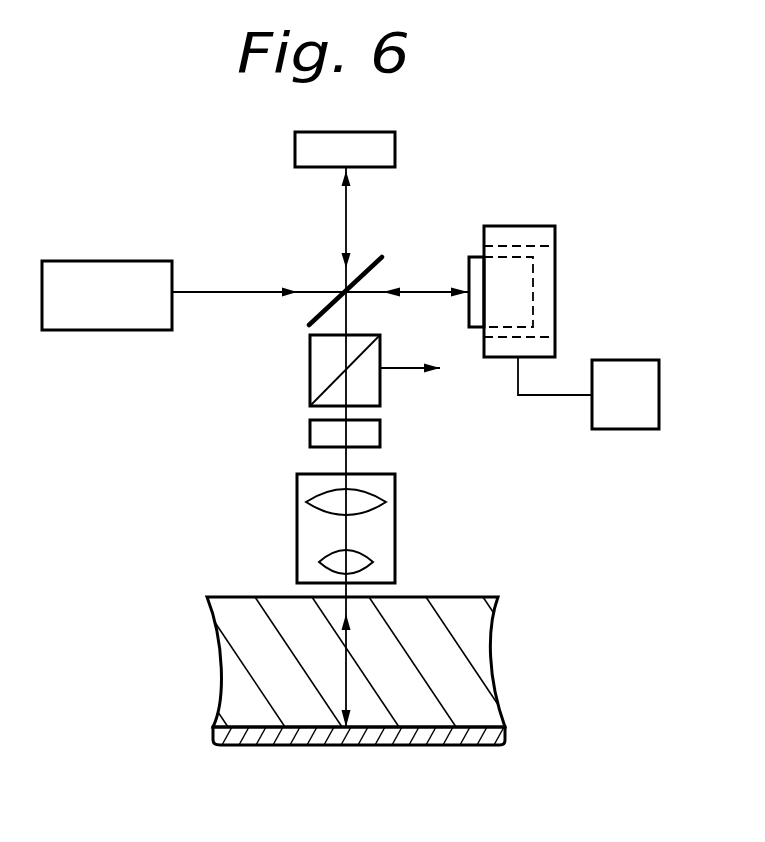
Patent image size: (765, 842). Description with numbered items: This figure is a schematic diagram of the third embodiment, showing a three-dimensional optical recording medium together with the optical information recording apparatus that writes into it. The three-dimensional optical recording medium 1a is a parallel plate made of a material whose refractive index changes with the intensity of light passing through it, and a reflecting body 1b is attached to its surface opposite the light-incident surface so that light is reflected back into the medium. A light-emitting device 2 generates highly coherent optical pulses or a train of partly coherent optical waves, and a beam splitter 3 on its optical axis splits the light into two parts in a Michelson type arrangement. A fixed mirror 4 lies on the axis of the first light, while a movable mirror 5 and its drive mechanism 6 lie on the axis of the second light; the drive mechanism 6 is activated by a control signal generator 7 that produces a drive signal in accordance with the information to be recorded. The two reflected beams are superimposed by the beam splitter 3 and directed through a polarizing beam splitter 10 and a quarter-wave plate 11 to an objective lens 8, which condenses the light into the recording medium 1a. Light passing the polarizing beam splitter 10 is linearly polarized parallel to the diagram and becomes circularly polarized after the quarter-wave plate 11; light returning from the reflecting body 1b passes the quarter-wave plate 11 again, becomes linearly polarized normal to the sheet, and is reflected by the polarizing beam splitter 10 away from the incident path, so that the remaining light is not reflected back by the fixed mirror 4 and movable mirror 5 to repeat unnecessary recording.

The three-dimensional optical recording medium 1a is at (498, 667).
The reflecting body 1b is at (438, 745).
The light-emitting device 2 is at (136, 261).
The beam splitter 3 is at (373, 270).
The fixed mirror 4 is at (343, 132).
The movable mirror 5 is at (469, 312).
The drive mechanism 6 is at (503, 226).
The control signal generator 7 is at (617, 430).
The objective lens 8 is at (395, 517).
The polarizing beam splitter 10 is at (310, 357).
The quarter-wave plate 11 is at (310, 432).